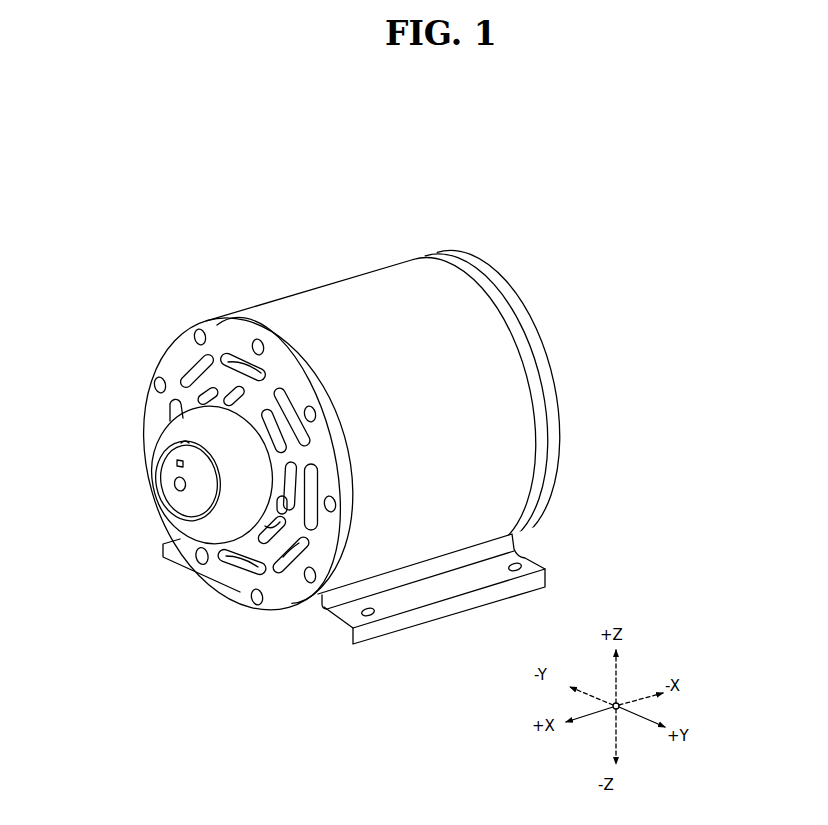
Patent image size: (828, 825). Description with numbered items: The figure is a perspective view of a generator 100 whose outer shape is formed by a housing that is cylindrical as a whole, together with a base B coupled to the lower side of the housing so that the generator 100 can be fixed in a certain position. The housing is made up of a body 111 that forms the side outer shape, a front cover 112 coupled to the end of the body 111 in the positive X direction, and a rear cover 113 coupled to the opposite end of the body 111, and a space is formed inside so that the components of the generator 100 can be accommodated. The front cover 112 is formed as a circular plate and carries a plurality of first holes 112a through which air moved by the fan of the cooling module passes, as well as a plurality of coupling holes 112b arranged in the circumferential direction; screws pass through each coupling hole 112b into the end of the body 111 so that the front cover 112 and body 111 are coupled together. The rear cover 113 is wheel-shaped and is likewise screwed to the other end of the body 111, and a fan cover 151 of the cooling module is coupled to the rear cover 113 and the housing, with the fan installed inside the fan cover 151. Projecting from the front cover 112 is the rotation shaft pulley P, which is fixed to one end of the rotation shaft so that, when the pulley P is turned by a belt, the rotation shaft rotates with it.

The generator 100 is at (113, 181).
The body 111 is at (373, 288).
The front cover 112 is at (266, 334).
The first hole 112a is at (247, 570).
The coupling hole 112b is at (155, 384).
The rear cover 113 is at (493, 303).
The fan cover 151 is at (543, 338).
The rotation shaft pulley P is at (205, 533).
The base B is at (437, 587).